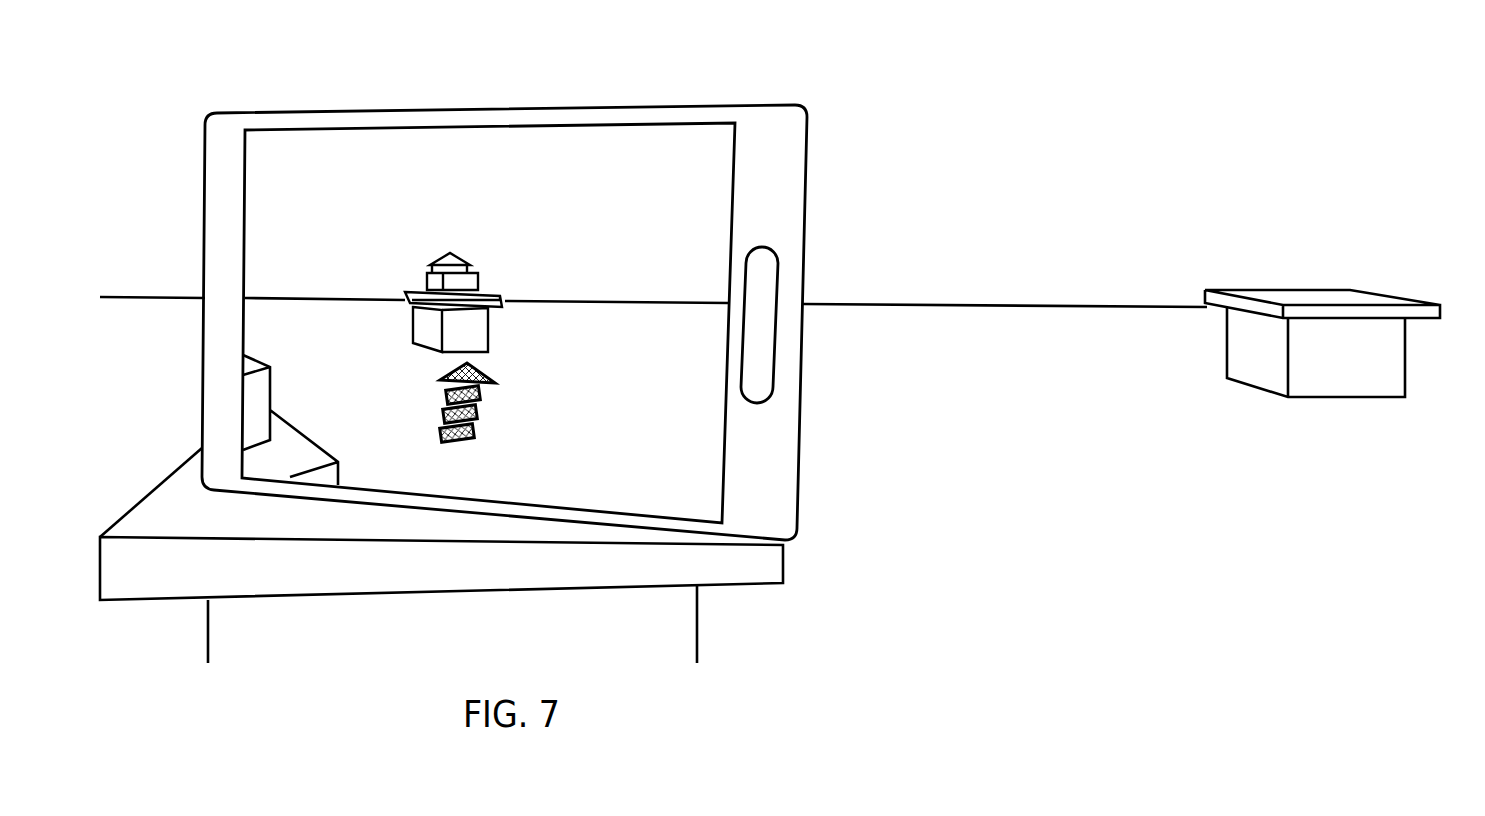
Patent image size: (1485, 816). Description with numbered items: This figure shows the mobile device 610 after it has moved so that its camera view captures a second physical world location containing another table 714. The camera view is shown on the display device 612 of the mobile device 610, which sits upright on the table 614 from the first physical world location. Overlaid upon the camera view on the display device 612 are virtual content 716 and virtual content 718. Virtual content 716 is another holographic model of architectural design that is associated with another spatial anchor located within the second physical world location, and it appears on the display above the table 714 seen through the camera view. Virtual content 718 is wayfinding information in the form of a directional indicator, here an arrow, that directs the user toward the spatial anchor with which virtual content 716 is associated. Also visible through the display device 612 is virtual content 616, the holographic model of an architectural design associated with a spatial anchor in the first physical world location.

The mobile device 610 is at (765, 483).
The display device 612 is at (304, 158).
The table 614 is at (728, 572).
The virtual content 616 is at (250, 406).
The table 714 is at (1372, 360).
The virtual content 716 is at (437, 242).
The virtual content 718 is at (457, 463).